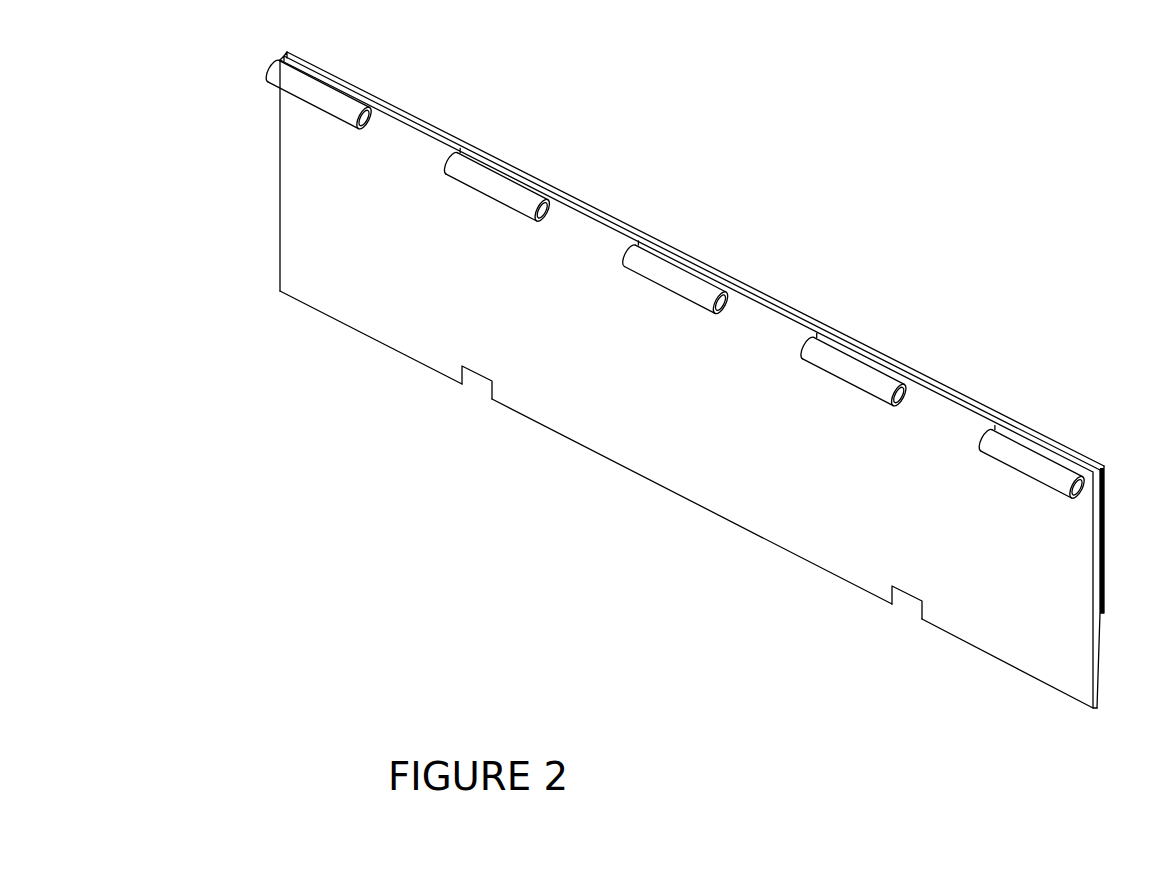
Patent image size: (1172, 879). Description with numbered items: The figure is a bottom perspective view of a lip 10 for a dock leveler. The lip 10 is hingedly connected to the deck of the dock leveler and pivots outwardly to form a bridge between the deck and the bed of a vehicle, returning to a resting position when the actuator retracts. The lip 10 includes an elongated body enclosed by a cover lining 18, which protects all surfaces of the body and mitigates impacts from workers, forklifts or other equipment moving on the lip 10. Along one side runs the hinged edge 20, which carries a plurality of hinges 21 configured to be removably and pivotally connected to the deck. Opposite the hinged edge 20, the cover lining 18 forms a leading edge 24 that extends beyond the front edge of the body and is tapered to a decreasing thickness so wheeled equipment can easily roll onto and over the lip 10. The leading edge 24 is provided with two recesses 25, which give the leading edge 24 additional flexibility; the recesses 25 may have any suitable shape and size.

The lip 10 is at (1033, 208).
The cover lining 18 is at (330, 246).
The hinged edge 20 is at (979, 378).
The hinges 21 is at (318, 90).
The leading edge 24 is at (655, 463).
The recesses 25 is at (480, 385).